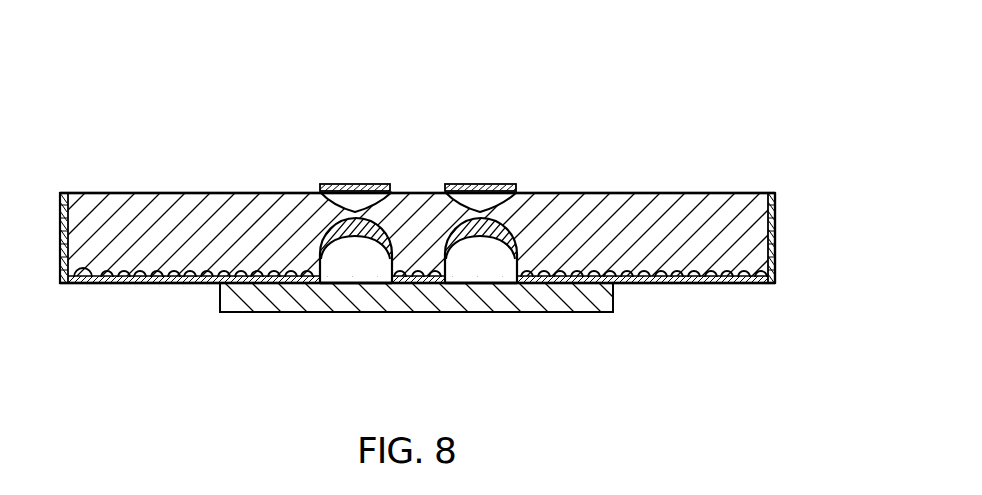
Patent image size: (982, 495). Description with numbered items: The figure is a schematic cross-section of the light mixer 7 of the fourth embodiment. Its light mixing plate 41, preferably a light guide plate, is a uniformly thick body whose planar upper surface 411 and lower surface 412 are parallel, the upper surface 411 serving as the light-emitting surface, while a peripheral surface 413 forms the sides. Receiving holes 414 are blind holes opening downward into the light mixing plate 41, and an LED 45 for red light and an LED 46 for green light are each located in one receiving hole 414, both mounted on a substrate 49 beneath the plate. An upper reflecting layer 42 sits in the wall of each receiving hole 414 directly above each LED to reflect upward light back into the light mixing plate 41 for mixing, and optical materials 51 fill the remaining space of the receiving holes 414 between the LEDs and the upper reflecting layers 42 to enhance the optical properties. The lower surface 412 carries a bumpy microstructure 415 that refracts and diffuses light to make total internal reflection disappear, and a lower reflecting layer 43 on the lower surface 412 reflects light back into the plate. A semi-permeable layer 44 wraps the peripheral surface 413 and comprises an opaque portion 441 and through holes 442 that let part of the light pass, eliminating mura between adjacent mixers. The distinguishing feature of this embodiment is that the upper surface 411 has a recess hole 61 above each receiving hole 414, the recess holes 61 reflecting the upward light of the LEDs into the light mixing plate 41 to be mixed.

The light mixer 7 is at (775, 98).
The light mixing plate 41 is at (684, 215).
The upper surface 411 is at (727, 192).
The lower surface 412 is at (737, 279).
The peripheral surface 413 is at (60, 193).
The receiving holes 414 is at (323, 250).
The microstructure 415 is at (88, 280).
The upper reflecting layer 42 is at (352, 186).
The lower reflecting layer 43 is at (683, 281).
The semi-permeable layer 44 is at (784, 222).
The opaque portion 441 is at (777, 268).
The through holes 442 is at (778, 208).
The LED 45 is at (357, 264).
The LED 46 is at (490, 264).
The substrate 49 is at (575, 300).
The optical materials 51 is at (331, 238).
The recess hole 61 is at (366, 184).